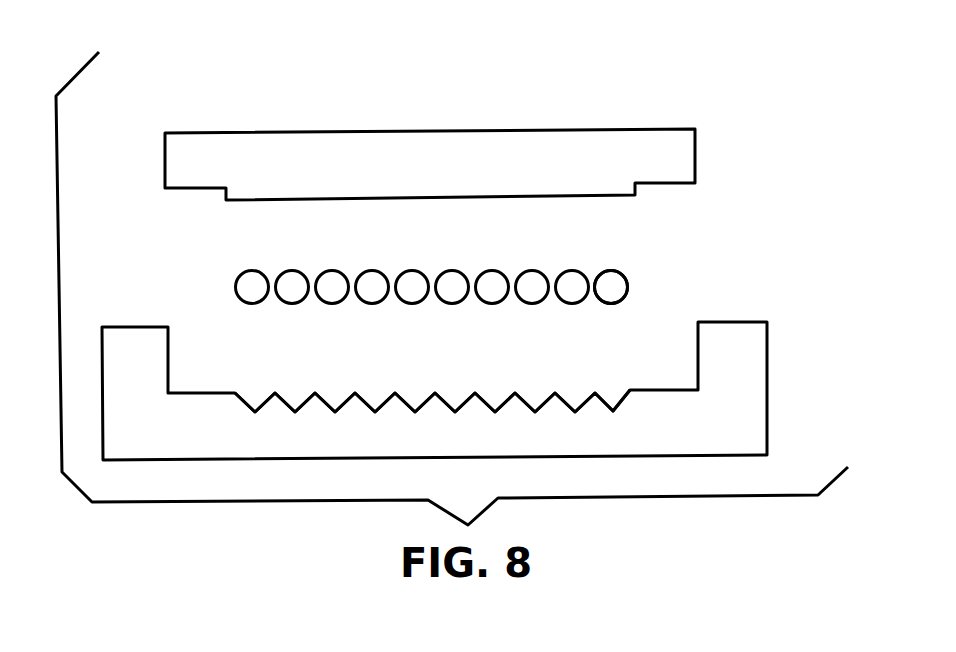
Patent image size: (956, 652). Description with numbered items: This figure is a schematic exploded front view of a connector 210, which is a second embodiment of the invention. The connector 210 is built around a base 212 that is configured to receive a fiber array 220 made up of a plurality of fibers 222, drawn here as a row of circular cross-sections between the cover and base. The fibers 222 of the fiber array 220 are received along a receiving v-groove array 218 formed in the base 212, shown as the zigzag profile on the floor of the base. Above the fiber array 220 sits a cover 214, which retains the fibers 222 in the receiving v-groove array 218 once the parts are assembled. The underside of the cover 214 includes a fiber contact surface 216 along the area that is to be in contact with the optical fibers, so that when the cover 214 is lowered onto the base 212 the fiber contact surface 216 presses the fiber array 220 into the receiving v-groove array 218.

The connector 210 is at (684, 97).
The base 212 is at (737, 392).
The cover 214 is at (675, 160).
The fiber contact surface 216 is at (415, 205).
The receiving v-groove array 218 is at (593, 392).
The fiber array 220 is at (432, 317).
The fibers 222 is at (616, 281).